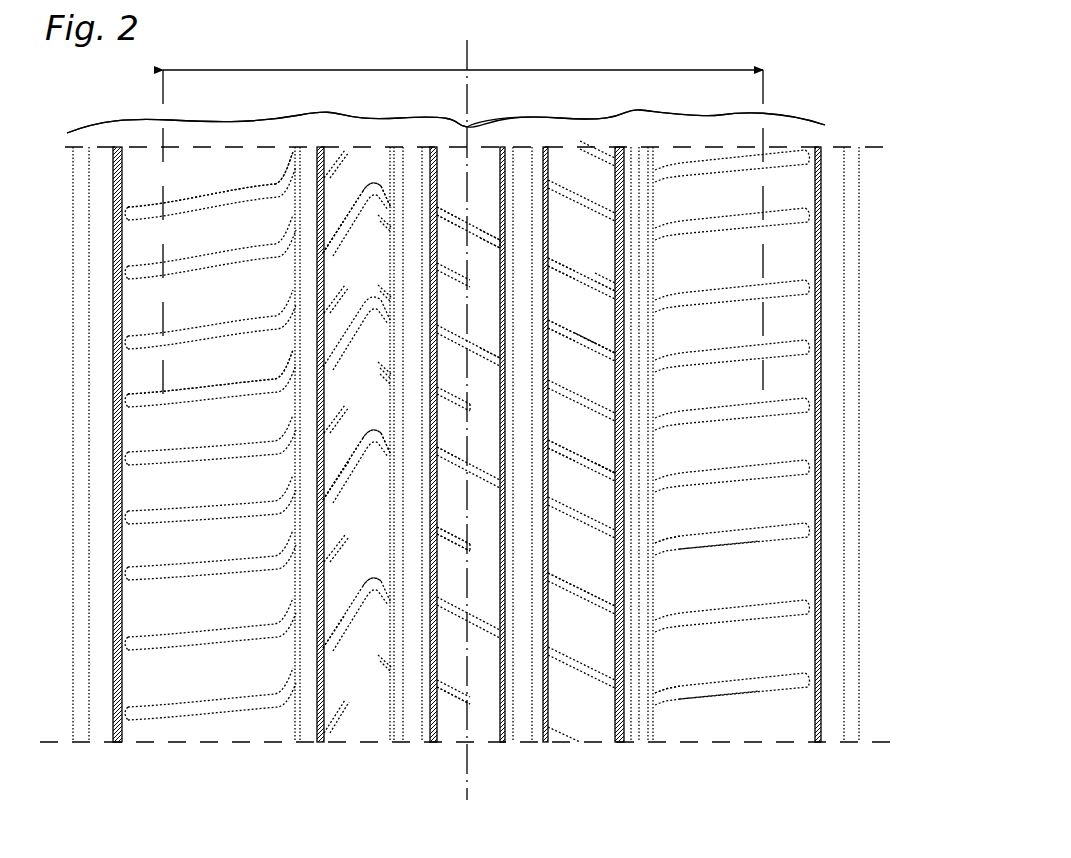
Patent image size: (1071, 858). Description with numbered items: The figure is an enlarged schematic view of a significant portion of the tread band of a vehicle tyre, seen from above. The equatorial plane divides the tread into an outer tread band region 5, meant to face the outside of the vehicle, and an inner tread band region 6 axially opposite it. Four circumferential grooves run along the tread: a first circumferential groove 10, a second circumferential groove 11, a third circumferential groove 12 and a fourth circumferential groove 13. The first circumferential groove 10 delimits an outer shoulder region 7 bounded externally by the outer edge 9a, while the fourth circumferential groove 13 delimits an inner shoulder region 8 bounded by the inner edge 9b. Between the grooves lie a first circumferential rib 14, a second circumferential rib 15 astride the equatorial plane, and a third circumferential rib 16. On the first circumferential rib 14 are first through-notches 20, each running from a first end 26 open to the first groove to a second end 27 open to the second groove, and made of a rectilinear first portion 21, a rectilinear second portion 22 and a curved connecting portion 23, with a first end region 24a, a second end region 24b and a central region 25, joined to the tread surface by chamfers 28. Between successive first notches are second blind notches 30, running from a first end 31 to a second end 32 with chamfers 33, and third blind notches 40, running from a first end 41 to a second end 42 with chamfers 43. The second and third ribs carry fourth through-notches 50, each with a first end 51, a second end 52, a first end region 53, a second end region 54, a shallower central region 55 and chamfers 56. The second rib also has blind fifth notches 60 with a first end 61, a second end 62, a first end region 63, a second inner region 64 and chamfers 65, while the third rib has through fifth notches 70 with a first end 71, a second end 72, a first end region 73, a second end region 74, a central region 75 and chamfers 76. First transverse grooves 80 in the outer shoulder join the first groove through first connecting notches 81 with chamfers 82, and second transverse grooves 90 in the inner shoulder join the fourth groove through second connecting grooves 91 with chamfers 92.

The outer tread band region 5 is at (252, 118).
The inner tread band region 6 is at (592, 116).
The outer shoulder region 7 is at (145, 745).
The inner shoulder region 8 is at (795, 745).
The outer edge 9a is at (112, 368).
The inner edge 9b is at (825, 372).
The first circumferential groove 10 is at (308, 745).
The second circumferential groove 11 is at (412, 745).
The third circumferential groove 12 is at (527, 745).
The fourth circumferential groove 13 is at (636, 745).
The first circumferential rib 14 is at (360, 745).
The second circumferential rib 15 is at (485, 745).
The third circumferential rib 16 is at (588, 745).
The first through-notch 20 is at (362, 340).
The first portion 21 is at (340, 488).
The second portion 22 is at (388, 445).
The curved connecting portion 23 is at (380, 430).
The first end region 24a is at (332, 258).
The second end region 24b is at (385, 222).
The central region 25 is at (360, 205).
The first end 26 is at (325, 252).
The second end 27 is at (385, 198).
The chamfers 28 is at (358, 590).
The second blind notch 30 is at (335, 298).
The first end 31 is at (325, 568).
The second end 32 is at (340, 540).
The chamfers 33 is at (326, 598).
The third blind notch 40 is at (386, 292).
The first end 41 is at (388, 364).
The second end 42 is at (384, 370).
The chamfers 43 is at (390, 378).
The fourth through-notch 50 is at (486, 218).
The first end 51 is at (443, 226).
The second end 52 is at (500, 246).
The first end region 53 is at (440, 210).
The second end region 54 is at (500, 270).
The central region 55 is at (475, 242).
The chamfers 56 is at (500, 345).
The fifth notch 60 is at (446, 282).
The first end 61 is at (441, 560).
The second end 62 is at (466, 540).
The first end region 63 is at (441, 395).
The second inner region 64 is at (470, 402).
The chamfers 65 is at (443, 702).
The fifth notch 70 is at (580, 320).
The first end 71 is at (550, 440).
The second end 72 is at (620, 470).
The first end region 73 is at (551, 325).
The second end region 74 is at (600, 343).
The central region 75 is at (593, 335).
The chamfers 76 is at (615, 440).
The first transverse groove 80 is at (152, 218).
The first connecting notch 81 is at (290, 190).
The chamfers 82 is at (225, 212).
The second transverse groove 90 is at (765, 537).
The second connecting groove 91 is at (665, 555).
The chamfers 92 is at (710, 555).